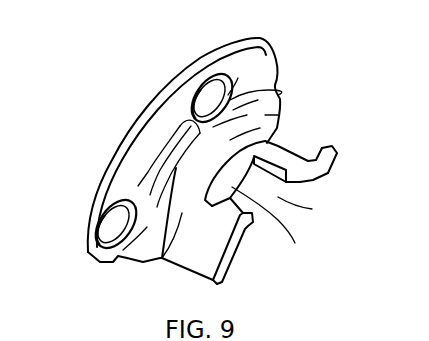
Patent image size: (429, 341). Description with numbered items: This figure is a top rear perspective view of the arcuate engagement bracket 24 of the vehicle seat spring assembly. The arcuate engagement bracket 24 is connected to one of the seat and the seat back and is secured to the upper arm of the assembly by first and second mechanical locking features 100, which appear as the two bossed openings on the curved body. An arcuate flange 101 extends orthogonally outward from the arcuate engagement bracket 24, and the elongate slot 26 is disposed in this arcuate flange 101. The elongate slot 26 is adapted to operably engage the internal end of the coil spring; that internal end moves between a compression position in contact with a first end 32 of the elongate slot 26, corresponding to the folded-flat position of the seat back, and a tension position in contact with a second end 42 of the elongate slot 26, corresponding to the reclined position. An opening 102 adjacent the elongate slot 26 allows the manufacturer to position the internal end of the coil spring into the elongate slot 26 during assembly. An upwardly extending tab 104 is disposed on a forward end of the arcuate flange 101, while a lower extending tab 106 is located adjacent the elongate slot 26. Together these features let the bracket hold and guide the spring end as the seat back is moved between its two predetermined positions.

The arcuate engagement bracket 24 is at (266, 70).
The elongate slot 26 is at (285, 218).
The first end of the elongate slot 32 is at (210, 198).
The second end of the elongate slot 42 is at (267, 163).
The mechanical locking features 100 is at (207, 94).
The arcuate flange 101 is at (163, 259).
The opening 102 is at (332, 179).
The upwardly extending tab 104 is at (336, 146).
The lower extending tab 106 is at (256, 214).